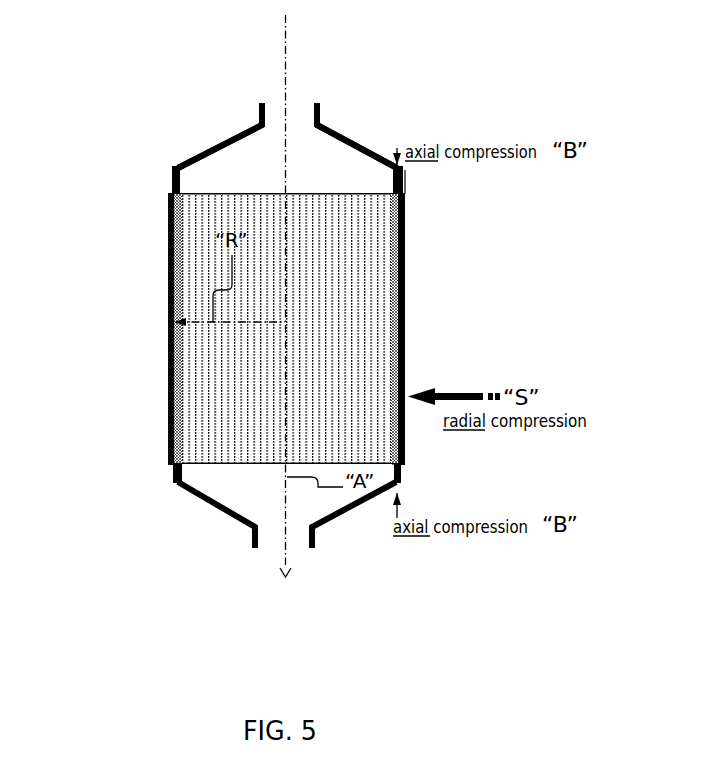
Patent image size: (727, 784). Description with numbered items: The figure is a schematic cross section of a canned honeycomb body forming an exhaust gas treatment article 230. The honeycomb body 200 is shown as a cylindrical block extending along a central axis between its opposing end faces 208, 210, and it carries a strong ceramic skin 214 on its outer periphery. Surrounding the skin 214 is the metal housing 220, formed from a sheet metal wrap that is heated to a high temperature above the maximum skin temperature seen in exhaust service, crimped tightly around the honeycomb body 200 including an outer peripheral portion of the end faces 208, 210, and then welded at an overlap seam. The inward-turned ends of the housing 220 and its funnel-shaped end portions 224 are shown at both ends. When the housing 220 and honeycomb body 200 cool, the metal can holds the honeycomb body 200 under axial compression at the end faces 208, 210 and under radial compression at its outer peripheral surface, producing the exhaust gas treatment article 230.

The honeycomb body 200 is at (357, 330).
The first end face 208 is at (221, 192).
The second end face 210 is at (238, 464).
The strong ceramic skin 214 is at (405, 266).
The metal housing 220 is at (408, 206).
The end cap funnel 224 is at (352, 143).
The exhaust gas treatment article 230 is at (192, 83).